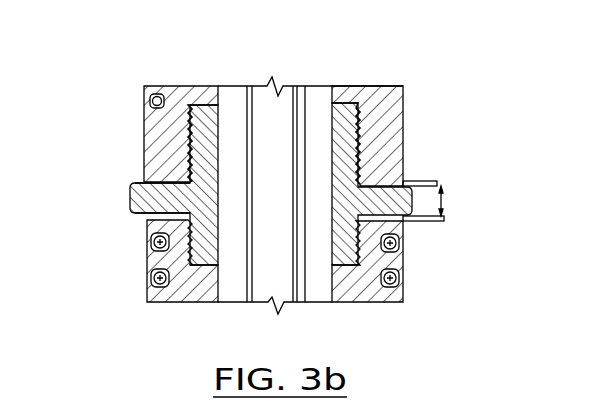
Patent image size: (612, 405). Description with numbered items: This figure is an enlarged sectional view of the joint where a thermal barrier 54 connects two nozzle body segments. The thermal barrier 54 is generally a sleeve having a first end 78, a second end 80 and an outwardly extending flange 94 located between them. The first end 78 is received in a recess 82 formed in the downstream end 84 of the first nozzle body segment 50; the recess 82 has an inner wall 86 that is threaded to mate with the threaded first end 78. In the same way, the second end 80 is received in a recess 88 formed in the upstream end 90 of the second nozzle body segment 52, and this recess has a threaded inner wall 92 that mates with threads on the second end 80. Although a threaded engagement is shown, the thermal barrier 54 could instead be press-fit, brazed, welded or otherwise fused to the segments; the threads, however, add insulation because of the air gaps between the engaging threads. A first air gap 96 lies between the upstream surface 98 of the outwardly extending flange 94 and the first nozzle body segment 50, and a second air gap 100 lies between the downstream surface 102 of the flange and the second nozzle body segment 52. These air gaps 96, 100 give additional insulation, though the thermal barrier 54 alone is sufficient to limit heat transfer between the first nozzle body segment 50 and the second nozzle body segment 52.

The first nozzle body segment 50 is at (279, 102).
The second nozzle body segment 52 is at (259, 285).
The thermal barrier 54 is at (229, 184).
The first end 78 is at (360, 130).
The second end 80 is at (400, 261).
The recess 82 is at (395, 88).
The downstream end 84 is at (390, 148).
The inner wall 86 is at (190, 138).
The recess 88 is at (380, 288).
The upstream end 90 is at (152, 263).
The threaded inner wall 92 is at (150, 243).
The outwardly extending flange 94 is at (444, 203).
The first air gap 96 is at (432, 163).
The upstream surface 98 is at (140, 184).
The second air gap 100 is at (437, 208).
The downstream surface 102 is at (145, 222).